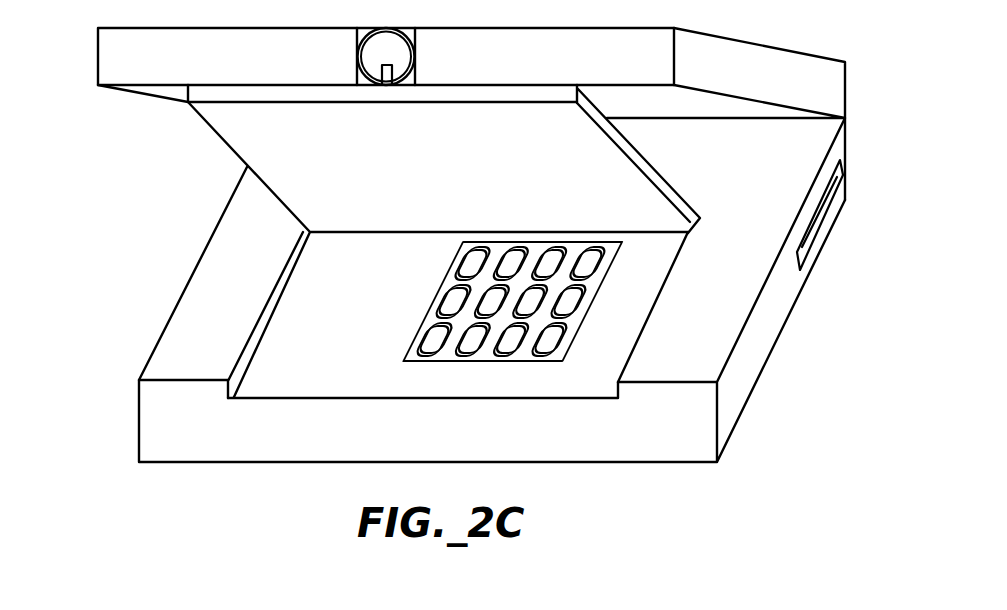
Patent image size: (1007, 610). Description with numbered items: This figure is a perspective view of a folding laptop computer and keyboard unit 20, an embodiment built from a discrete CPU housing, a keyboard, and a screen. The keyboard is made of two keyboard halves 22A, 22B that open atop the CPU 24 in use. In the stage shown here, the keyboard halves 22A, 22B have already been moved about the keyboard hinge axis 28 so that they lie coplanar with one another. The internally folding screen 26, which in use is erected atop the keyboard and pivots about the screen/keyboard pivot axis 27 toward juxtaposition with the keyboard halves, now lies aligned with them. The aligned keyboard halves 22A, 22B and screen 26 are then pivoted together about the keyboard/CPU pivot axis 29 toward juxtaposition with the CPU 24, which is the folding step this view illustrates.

The laptop computer and keyboard unit 20 is at (172, 194).
The keyboard half 22A is at (107, 40).
The keyboard half 22B is at (800, 67).
The CPU 24 is at (742, 402).
The internally folding screen 26 is at (642, 163).
The screen/keyboard pivot axis 27 is at (384, 65).
The keyboard hinge axis 28 is at (412, 30).
The keyboard/CPU pivot axis 29 is at (848, 120).